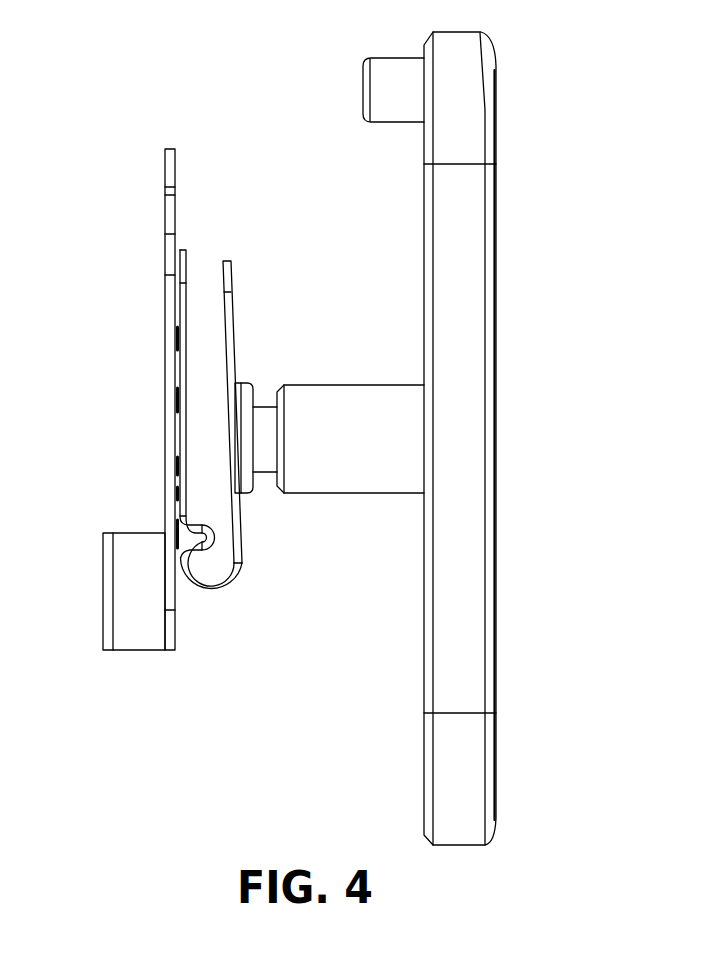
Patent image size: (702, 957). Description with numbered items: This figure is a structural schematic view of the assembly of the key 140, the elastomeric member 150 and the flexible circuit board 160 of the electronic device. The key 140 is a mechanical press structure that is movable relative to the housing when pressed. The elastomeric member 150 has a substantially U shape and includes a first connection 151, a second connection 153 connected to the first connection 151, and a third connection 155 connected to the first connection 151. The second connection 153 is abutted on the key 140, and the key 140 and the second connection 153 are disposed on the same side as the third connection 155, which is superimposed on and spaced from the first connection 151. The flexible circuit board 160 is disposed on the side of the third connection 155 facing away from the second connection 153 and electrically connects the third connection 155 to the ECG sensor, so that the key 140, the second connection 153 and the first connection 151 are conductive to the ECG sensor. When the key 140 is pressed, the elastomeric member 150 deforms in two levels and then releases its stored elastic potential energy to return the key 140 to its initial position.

The key 140 is at (477, 482).
The elastomeric member 150 is at (224, 591).
The first connection 151 is at (238, 528).
The second connection 153 is at (227, 487).
The third connection 155 is at (184, 493).
The flexible circuit board 160 is at (127, 569).